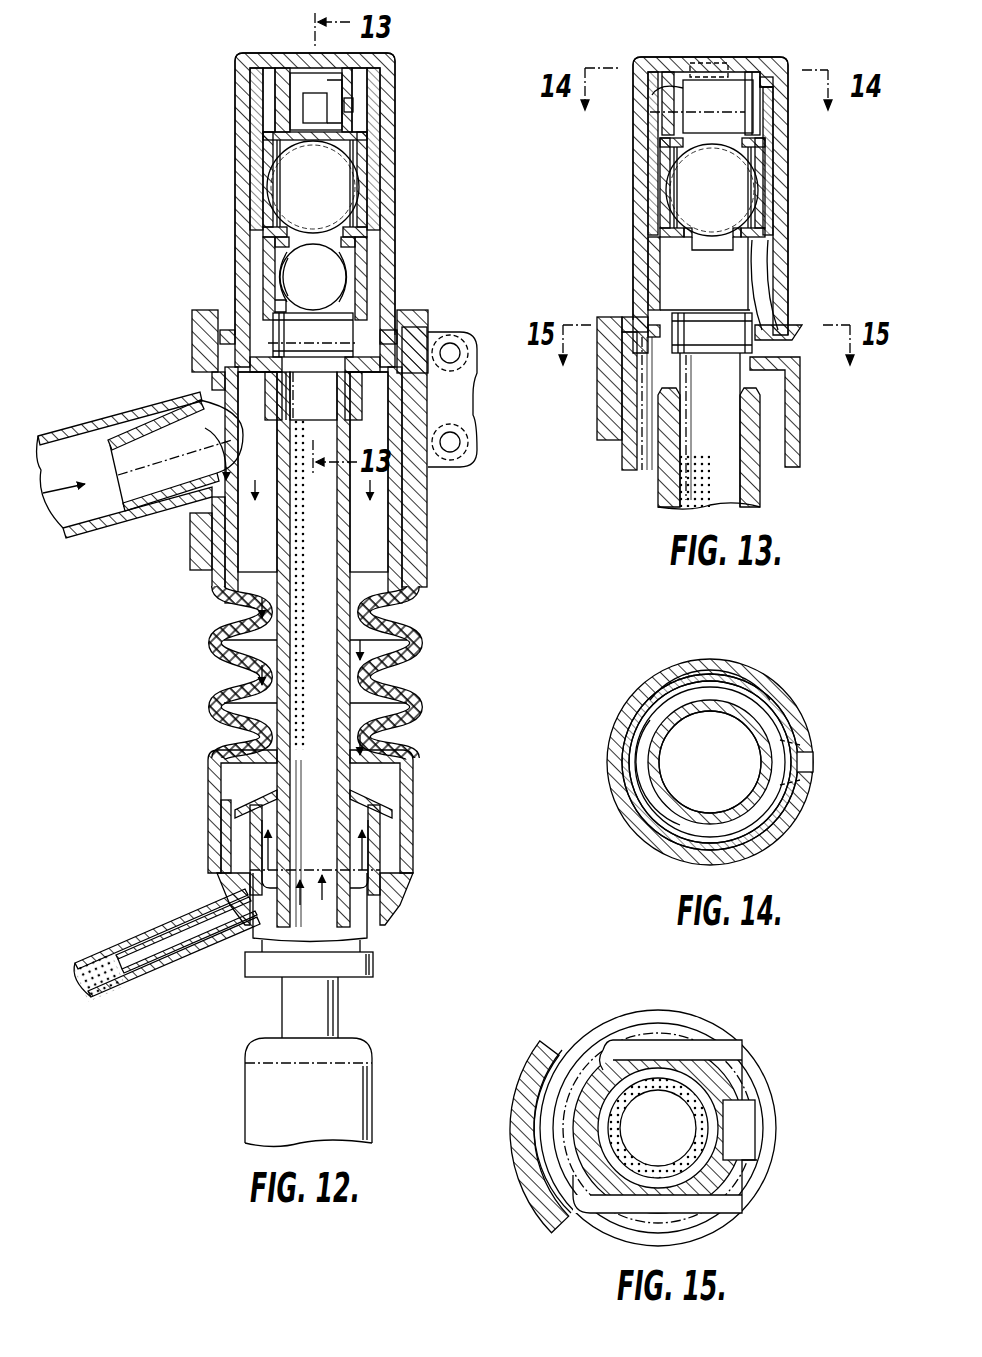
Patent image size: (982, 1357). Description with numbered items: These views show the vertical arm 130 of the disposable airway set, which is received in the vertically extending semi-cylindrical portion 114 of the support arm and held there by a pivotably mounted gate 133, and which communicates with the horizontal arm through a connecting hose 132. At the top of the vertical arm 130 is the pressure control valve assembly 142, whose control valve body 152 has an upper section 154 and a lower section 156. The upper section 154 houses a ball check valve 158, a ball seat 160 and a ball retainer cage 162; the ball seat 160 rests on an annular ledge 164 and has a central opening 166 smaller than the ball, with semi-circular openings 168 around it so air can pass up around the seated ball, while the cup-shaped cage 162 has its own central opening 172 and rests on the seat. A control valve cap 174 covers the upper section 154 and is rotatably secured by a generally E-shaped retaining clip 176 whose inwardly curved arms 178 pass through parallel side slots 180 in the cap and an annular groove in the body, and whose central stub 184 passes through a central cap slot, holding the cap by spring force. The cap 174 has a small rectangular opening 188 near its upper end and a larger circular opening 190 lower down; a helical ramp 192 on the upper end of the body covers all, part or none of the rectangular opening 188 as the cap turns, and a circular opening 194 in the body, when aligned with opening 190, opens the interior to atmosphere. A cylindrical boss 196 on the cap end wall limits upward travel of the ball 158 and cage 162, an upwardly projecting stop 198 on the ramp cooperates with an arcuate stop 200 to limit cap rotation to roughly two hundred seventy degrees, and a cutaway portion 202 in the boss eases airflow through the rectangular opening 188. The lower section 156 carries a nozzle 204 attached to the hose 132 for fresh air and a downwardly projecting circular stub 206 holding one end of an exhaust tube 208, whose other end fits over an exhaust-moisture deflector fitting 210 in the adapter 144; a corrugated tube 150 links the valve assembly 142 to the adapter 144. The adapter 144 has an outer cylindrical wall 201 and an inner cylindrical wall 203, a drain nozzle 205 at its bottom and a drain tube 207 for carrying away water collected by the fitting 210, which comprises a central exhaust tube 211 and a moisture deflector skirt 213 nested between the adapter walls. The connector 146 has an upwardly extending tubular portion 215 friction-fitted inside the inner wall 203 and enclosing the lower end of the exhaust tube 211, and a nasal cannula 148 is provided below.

In FIG. 12, the vertically extending semi-cylindrical portion 114 is at (197, 552).
In FIG. 13, the vertically extending semi-cylindrical portion 114 is at (608, 442).
In FIG. 15, the vertically extending semi-cylindrical portion 114 is at (547, 1225).
In FIG. 12, the vertical arm 130 is at (152, 366).
In FIG. 12, the connecting hose 132 is at (70, 437).
In FIG. 12, the pivotably mounted gate 133 is at (478, 420).
In FIG. 12, the pressure control valve assembly 142 is at (403, 170).
In FIG. 13, the pressure control valve assembly 142 is at (795, 160).
In FIG. 12, the adapter 144 is at (409, 884).
In FIG. 12, the connector 146 is at (378, 958).
In FIG. 12, the nasal cannula 148 is at (253, 1124).
In FIG. 12, the corrugated tube 150 is at (420, 648).
In FIG. 12, the control valve body 152 is at (397, 298).
In FIG. 13, the control valve body 152 is at (628, 273).
In FIG. 14, the control valve body 152 is at (605, 757).
In FIG. 12, the upper section 154 is at (380, 247).
In FIG. 13, the upper section 154 is at (655, 246).
In FIG. 12, the lower section 156 is at (420, 405).
In FIG. 13, the lower section 156 is at (800, 448).
In FIG. 12, the ball check valve 158 is at (340, 190).
In FIG. 13, the ball check valve 158 is at (696, 192).
In FIG. 14, the ball check valve 158 is at (748, 783).
In FIG. 12, the ball seat 160 is at (279, 228).
In FIG. 13, the ball seat 160 is at (770, 228).
In FIG. 12, the ball retainer cage 162 is at (268, 180).
In FIG. 13, the ball retainer cage 162 is at (762, 211).
In FIG. 12, the annular ledge 164 is at (368, 231).
In FIG. 13, the annular ledge 164 is at (660, 232).
In FIG. 12, the central opening 166 is at (278, 258).
In FIG. 13, the central opening 166 is at (704, 240).
In FIG. 12, the semi-circular openings 168 is at (285, 240).
In FIG. 13, the semi-circular openings 168 is at (738, 238).
In FIG. 12, the central opening 172 is at (270, 150).
In FIG. 13, the central opening 172 is at (668, 148).
In FIG. 12, the control valve cap 174 is at (258, 127).
In FIG. 13, the control valve cap 174 is at (780, 187).
In FIG. 14, the control valve cap 174 is at (753, 678).
In FIG. 12, the E-shaped retaining clip 176 is at (278, 333).
In FIG. 13, the E-shaped retaining clip 176 is at (793, 342).
In FIG. 15, the E-shaped retaining clip 176 is at (778, 1083).
In FIG. 15, the inwardly curved arms 178 is at (658, 1047).
In FIG. 12, the side slots 180 is at (232, 338).
In FIG. 15, the central stub 184 is at (740, 1138).
In FIG. 12, the rectangular opening 188 is at (312, 104).
In FIG. 13, the rectangular opening 188 is at (745, 120).
In FIG. 12, the circular opening 190 is at (346, 275).
In FIG. 13, the circular opening 190 is at (778, 252).
In FIG. 12, the helical ramp 192 is at (345, 88).
In FIG. 13, the helical ramp 192 is at (712, 62).
In FIG. 14, the helical ramp 192 is at (726, 682).
In FIG. 12, the circular opening 194 is at (290, 283).
In FIG. 13, the circular opening 194 is at (786, 278).
In FIG. 12, the cylindrical boss 196 is at (340, 108).
In FIG. 13, the cylindrical boss 196 is at (666, 128).
In FIG. 14, the cylindrical boss 196 is at (660, 790).
In FIG. 12, the upwardly projecting stop 198 is at (296, 68).
In FIG. 13, the upwardly projecting stop 198 is at (753, 70).
In FIG. 14, the upwardly projecting stop 198 is at (768, 703).
In FIG. 13, the arcuate stop 200 is at (772, 66).
In FIG. 14, the arcuate stop 200 is at (792, 730).
In FIG. 12, the outer cylindrical wall 201 is at (250, 860).
In FIG. 12, the cutaway portion 202 is at (336, 122).
In FIG. 13, the cutaway portion 202 is at (752, 99).
In FIG. 12, the inner cylindrical wall 203 is at (226, 876).
In FIG. 12, the nozzle 204 is at (160, 425).
In FIG. 12, the drain nozzle 205 is at (196, 945).
In FIG. 12, the circular stub 206 is at (330, 412).
In FIG. 12, the drain tube 207 is at (166, 958).
In FIG. 12, the exhaust tube 208 is at (395, 500).
In FIG. 12, the exhaust-moisture deflector fitting 210 is at (386, 828).
In FIG. 12, the central exhaust tube 211 is at (338, 828).
In FIG. 12, the moisture deflector skirt 213 is at (383, 860).
In FIG. 12, the tubular portion 215 is at (365, 906).